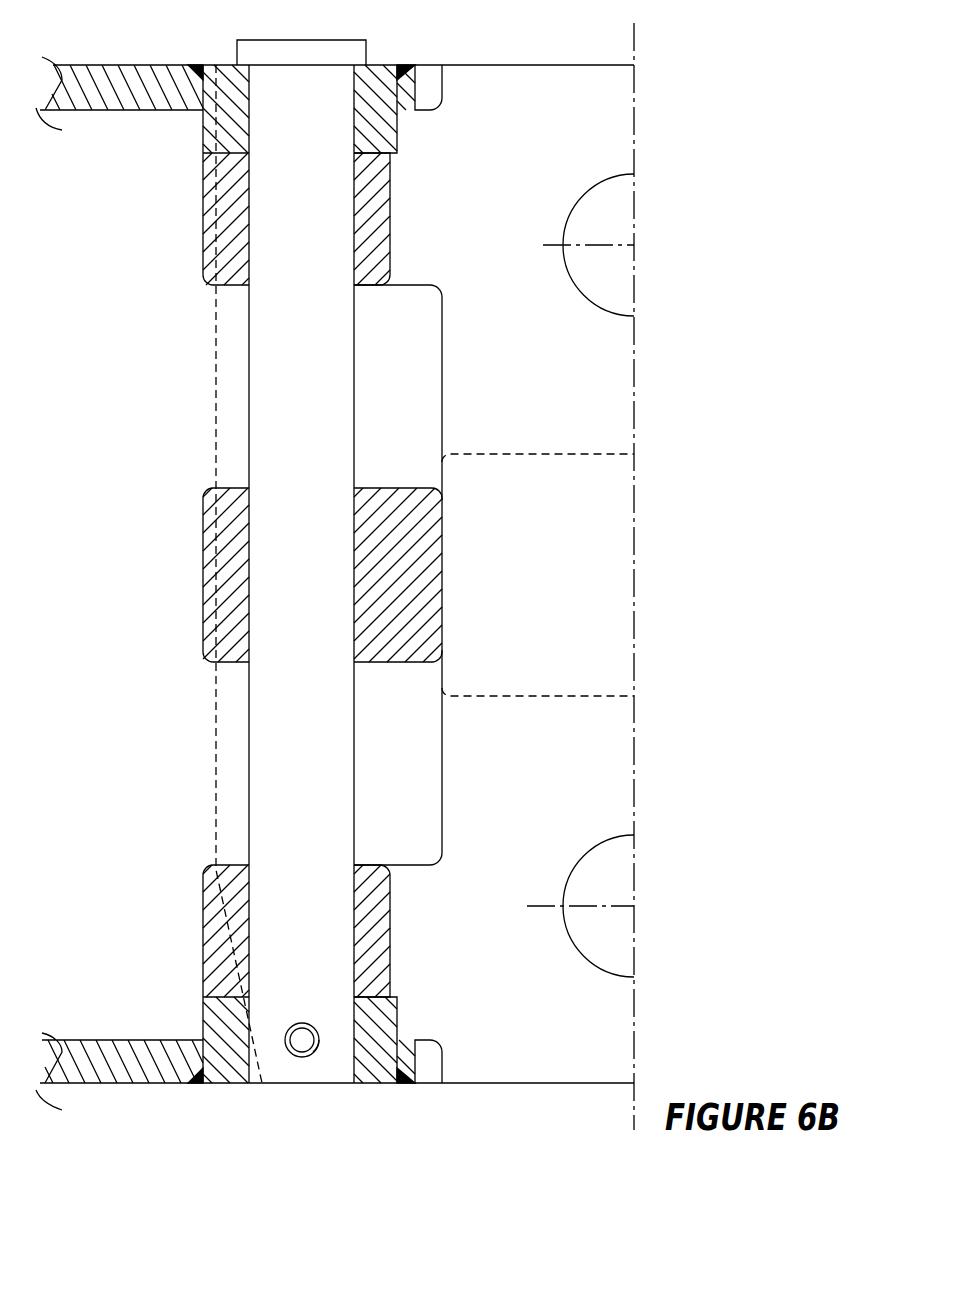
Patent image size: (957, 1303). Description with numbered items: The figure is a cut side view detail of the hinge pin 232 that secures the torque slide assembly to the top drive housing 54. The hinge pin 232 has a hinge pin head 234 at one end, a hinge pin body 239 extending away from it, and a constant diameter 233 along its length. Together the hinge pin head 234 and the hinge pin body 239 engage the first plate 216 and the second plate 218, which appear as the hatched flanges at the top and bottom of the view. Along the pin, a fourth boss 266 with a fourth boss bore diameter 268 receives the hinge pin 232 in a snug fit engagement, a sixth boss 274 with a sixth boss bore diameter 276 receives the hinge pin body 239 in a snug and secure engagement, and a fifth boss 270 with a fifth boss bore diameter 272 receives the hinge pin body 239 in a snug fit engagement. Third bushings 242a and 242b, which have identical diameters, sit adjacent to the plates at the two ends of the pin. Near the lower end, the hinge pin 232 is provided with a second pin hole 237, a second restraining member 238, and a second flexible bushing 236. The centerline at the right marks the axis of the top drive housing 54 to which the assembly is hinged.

The first plate 216 is at (133, 65).
The second plate 218 is at (145, 1085).
The hinge pin head 234 is at (336, 40).
The top drive housing 54 is at (596, 113).
The third bushing 242b is at (400, 126).
The third bushing 242a is at (400, 1018).
The fourth boss 266 is at (203, 213).
The fourth boss bore diameter 268 is at (249, 208).
The hinge pin 232 is at (362, 330).
The constant diameter 233 is at (249, 388).
The sixth boss 274 is at (203, 575).
The sixth boss bore diameter 276 is at (249, 580).
The hinge pin body 239 is at (354, 751).
The fifth boss 270 is at (203, 940).
The fifth boss bore diameter 272 is at (249, 915).
The second pin hole 237 is at (300, 1058).
The second restraining member 238 is at (287, 1055).
The second flexible bushing 236 is at (313, 1057).